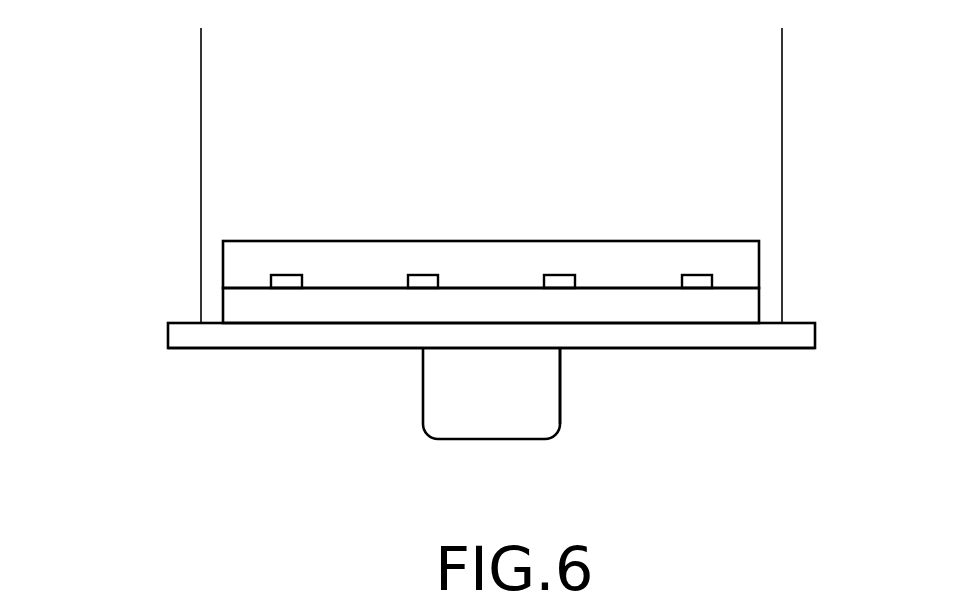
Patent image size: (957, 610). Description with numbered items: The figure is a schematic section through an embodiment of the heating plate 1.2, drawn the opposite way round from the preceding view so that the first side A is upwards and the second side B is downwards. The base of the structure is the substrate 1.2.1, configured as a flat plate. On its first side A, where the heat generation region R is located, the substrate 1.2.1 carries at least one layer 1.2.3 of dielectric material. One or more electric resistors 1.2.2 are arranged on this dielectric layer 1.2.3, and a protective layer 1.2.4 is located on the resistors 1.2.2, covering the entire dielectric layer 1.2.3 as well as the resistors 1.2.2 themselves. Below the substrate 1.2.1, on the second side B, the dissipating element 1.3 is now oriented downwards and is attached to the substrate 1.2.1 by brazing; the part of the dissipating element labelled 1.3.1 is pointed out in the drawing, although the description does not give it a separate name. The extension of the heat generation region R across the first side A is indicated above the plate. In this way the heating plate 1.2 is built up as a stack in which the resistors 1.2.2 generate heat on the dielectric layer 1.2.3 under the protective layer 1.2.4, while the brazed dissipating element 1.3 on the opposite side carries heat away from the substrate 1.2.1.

The heating plate 1.2 is at (168, 335).
The substrate 1.2.1 is at (403, 350).
The electric resistors 1.2.2 is at (286, 280).
The dielectric layer 1.2.3 is at (683, 307).
The protective layer 1.2.4 is at (718, 252).
The dissipating element 1.3 is at (517, 439).
The side wall of stem 1.3.1 is at (560, 375).
The first side A is at (167, 269).
The second side B is at (181, 410).
The heat generation region R is at (782, 72).